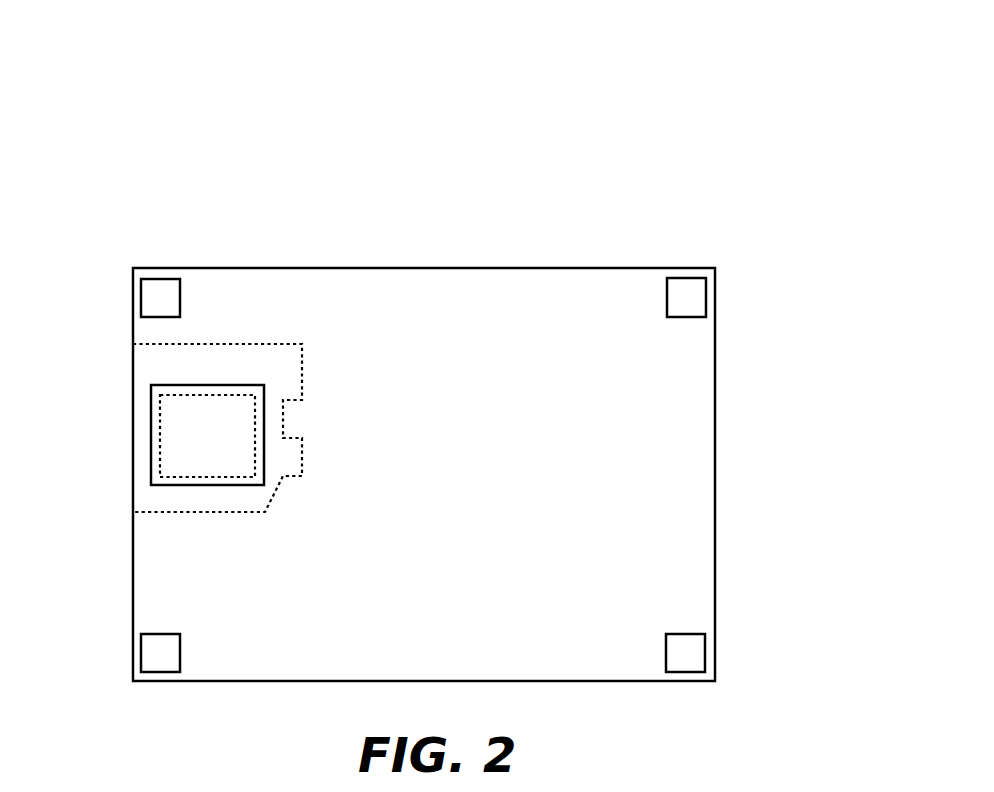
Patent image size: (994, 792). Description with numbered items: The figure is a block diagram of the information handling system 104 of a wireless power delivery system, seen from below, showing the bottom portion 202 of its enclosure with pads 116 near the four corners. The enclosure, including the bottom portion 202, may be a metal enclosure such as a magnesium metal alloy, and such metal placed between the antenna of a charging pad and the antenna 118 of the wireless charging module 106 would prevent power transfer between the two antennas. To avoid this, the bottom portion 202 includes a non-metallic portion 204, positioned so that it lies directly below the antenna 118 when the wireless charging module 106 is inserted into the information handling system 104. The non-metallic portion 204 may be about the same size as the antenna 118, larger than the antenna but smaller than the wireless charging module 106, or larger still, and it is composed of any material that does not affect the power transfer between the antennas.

The information handling system 104 is at (746, 125).
The bottom portion 202 is at (683, 467).
The pads 116 is at (152, 303).
The wireless charging module 106 is at (221, 374).
The non-metallic portion 204 is at (148, 398).
The antenna 118 is at (246, 462).